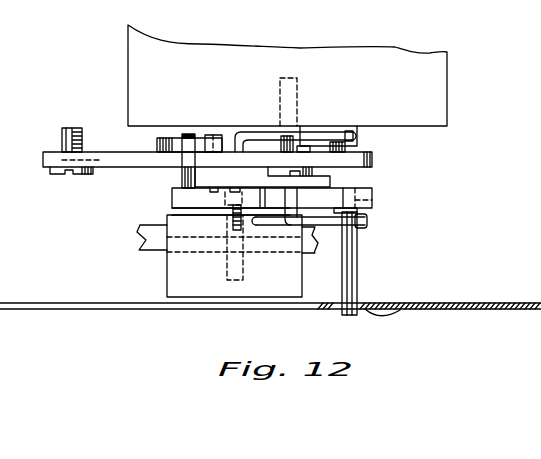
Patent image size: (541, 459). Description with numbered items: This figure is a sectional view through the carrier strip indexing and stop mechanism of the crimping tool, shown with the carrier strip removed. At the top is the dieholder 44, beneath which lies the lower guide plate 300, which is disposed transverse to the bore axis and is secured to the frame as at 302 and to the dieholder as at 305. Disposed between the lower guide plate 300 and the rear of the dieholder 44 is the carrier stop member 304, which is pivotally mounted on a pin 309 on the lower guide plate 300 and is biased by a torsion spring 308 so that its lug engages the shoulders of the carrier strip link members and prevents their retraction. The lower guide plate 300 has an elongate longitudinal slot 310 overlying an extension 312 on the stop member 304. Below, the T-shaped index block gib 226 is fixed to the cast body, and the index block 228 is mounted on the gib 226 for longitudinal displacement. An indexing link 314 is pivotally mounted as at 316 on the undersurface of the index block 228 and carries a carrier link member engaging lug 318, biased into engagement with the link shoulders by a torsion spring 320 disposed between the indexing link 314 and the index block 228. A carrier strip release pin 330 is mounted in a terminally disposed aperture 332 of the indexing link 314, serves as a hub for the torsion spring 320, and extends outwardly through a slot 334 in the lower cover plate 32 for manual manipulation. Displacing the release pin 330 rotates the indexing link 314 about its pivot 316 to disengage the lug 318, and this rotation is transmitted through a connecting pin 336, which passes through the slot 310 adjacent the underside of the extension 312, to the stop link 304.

The dieholder 44 is at (443, 77).
The securement of lower guide plate to dieholder 305 is at (298, 105).
The extension 312 is at (163, 142).
The elongate longitudinal slot 310 is at (112, 152).
The pin 309 is at (210, 157).
The torsion spring 308 is at (266, 135).
The carrier stop member 304 is at (300, 145).
The lower guide plate 300 is at (370, 157).
The securement of lower guide plate to frame 302 is at (58, 172).
The connecting pin 336 is at (182, 178).
The carrier link member engaging lug 318 is at (300, 197).
The indexing link 314 is at (372, 204).
The terminally disposed aperture 332 is at (371, 190).
The torsion spring 320 is at (367, 228).
The index block member 228 is at (167, 280).
The pivotal mounting 316 is at (227, 240).
The index block gib 226 is at (138, 227).
The carrier strip release pin 330 is at (358, 272).
The slot 334 is at (406, 307).
The lower cover plate 32 is at (500, 305).